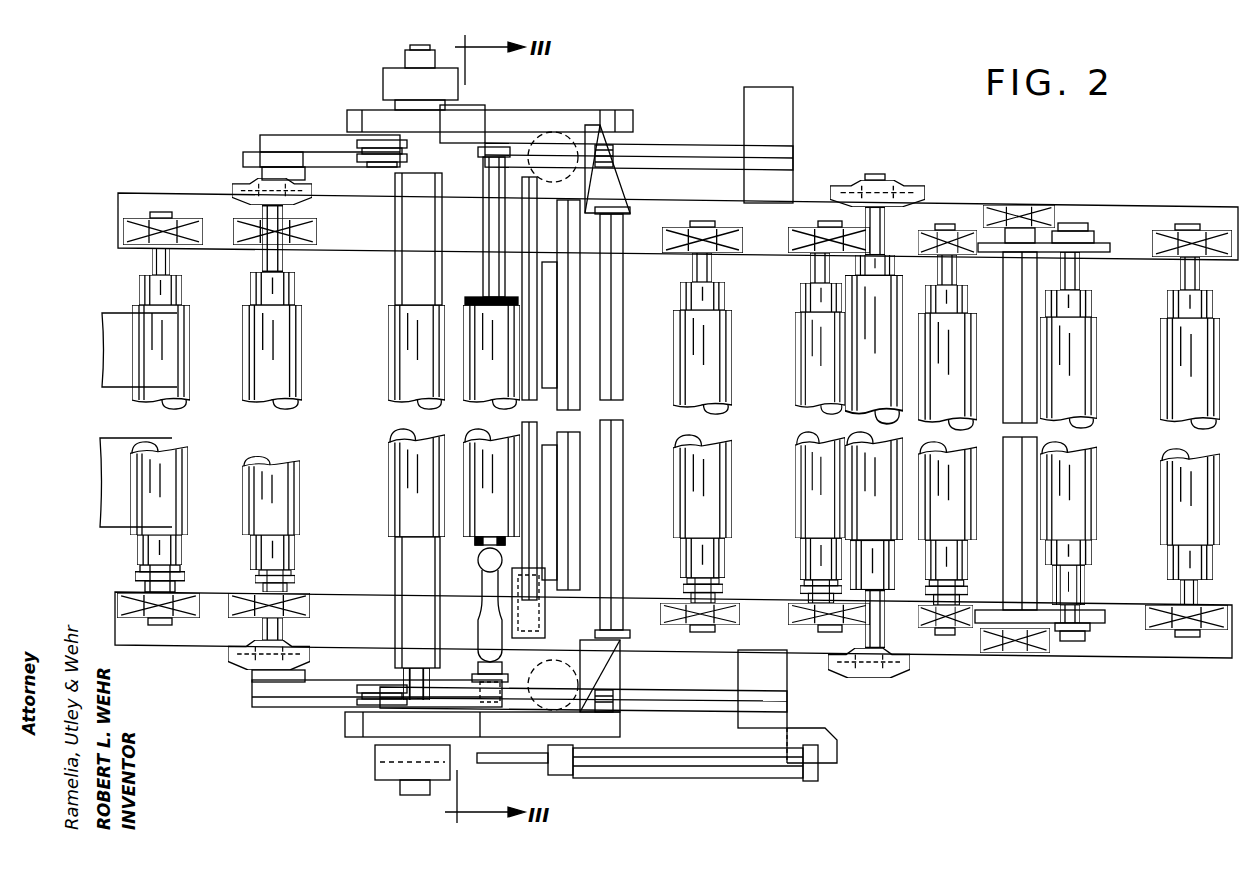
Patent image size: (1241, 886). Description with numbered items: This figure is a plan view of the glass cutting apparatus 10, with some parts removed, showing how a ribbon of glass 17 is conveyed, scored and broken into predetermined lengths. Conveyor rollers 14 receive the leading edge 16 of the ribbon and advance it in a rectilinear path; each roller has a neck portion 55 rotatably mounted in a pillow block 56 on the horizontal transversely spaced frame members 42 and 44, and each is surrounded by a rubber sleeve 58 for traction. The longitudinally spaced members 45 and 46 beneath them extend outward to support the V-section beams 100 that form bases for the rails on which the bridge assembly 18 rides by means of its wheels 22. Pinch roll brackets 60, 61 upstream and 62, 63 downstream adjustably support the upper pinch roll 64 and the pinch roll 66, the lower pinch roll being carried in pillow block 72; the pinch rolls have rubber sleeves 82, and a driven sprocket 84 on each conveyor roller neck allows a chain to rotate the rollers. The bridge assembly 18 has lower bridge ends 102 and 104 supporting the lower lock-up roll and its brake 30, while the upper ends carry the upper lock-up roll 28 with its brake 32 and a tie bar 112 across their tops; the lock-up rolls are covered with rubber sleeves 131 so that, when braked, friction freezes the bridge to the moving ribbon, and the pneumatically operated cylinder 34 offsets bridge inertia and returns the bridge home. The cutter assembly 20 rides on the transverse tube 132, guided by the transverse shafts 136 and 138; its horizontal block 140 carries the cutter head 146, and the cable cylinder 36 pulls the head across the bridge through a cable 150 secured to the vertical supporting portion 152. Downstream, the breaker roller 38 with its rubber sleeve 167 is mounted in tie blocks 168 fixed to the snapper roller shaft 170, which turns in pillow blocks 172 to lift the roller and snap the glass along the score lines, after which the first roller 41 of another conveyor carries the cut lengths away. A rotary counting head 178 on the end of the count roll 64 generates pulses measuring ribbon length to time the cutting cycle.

The glass cutting apparatus 10 is at (1109, 165).
The conveyor rollers 14 is at (182, 288).
The leading edge 16 is at (100, 482).
The ribbon of glass 17 is at (100, 528).
The bridge assembly 18 is at (343, 753).
The cutter assembly 20 is at (473, 582).
The wheels 22 is at (362, 166).
The upper lock-up roll 28 is at (395, 558).
The brake 30 is at (375, 755).
The brake 32 is at (375, 770).
The pneumatically operated cylinder 34 is at (698, 778).
The cable cylinder 36 is at (623, 530).
The breaker roller 38 is at (1085, 578).
The first roller of another conveyor 41 is at (1160, 502).
The horizontal transversely spaced member 42 is at (1082, 658).
The horizontal transversely spaced member 44 is at (1112, 207).
The horizontal longitudinally spaced member 45 is at (300, 174).
The horizontal longitudinally spaced member 46 is at (793, 127).
The neck portion 55 is at (184, 592).
The pillow block 56 is at (728, 230).
The rubber sleeve 58 is at (182, 542).
The pinch roll bracket 60 is at (236, 660).
The pinch roll bracket 61 is at (236, 186).
The pinch roll bracket 62 is at (882, 677).
The pinch roll bracket 63 is at (882, 180).
The upper pinch roll 64 is at (296, 562).
The pinch roll 66 is at (882, 598).
The pillow block 72 is at (252, 622).
The rubber sleeve 82 is at (296, 547).
The driven sprocket 84 is at (137, 580).
The beam 100 is at (688, 143).
The lower right hand bridge end 102 is at (345, 724).
The lower left hand bridge end 104 is at (348, 120).
The tie bar 112 is at (358, 112).
The rubber sleeve 131 is at (388, 542).
The transverse rectangular tube 132 is at (580, 320).
The transverse shaft 136 is at (580, 286).
The transverse shaft 138 is at (495, 275).
The horizontal block 140 is at (545, 610).
The cutter head 146 is at (478, 630).
The cable 150 is at (478, 668).
The vertical supporting portion 152 is at (540, 135).
The rubber sleeve 167 is at (1092, 550).
The tie block 168 is at (1090, 243).
The snapper roller shaft 170 is at (1005, 536).
The pillow block 172 is at (1040, 205).
The rotary counting head 178 is at (243, 158).